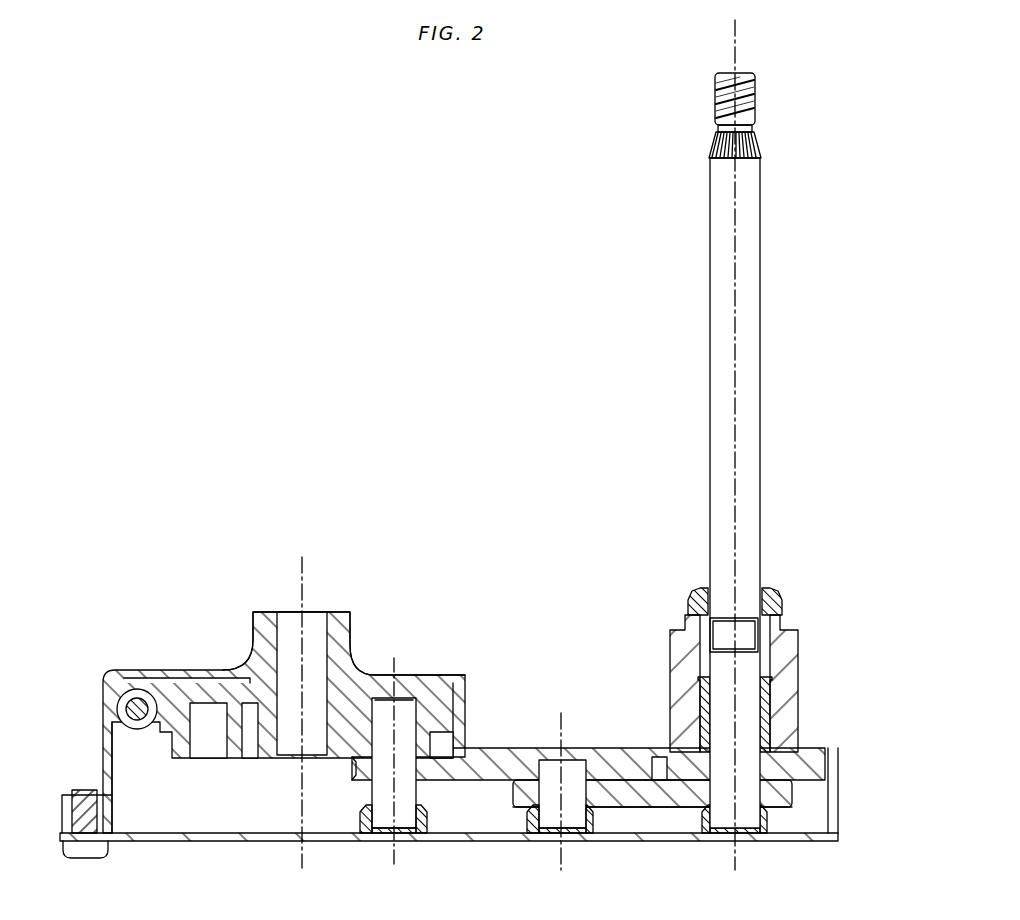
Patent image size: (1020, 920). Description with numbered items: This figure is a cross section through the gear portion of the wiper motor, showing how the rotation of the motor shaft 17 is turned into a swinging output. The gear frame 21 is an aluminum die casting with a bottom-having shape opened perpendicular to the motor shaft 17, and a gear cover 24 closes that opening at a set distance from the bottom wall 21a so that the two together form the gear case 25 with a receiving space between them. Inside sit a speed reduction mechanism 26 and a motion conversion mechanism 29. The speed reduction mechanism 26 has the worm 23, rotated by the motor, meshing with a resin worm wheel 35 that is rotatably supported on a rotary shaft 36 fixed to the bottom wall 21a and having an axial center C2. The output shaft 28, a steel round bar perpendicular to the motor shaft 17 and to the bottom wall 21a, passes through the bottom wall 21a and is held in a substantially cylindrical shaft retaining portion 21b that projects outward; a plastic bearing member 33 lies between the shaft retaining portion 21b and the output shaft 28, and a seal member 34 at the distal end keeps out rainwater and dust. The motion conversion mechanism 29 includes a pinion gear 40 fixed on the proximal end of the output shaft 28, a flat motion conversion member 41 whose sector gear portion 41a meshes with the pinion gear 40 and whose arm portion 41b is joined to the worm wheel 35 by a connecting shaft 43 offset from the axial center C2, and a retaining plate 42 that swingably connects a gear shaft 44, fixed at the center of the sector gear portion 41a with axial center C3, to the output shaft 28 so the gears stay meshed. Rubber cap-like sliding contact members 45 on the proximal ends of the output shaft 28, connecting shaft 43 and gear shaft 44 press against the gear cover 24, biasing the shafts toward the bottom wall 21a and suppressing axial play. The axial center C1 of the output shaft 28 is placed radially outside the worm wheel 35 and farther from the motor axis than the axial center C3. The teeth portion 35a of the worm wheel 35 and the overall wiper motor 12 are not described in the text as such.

The steering apparatus 12 is at (557, 482).
The motor shaft 17 is at (131, 692).
The gear frame 21 is at (459, 664).
The bottom wall 21a is at (196, 676).
The shaft retaining portion 21b is at (779, 665).
The worm 23 is at (148, 695).
The gear cover 24 is at (492, 832).
The gear case 25 is at (512, 578).
The speed reduction mechanism 26 is at (160, 748).
The output shaft 28 is at (745, 424).
The motion conversion mechanism 29 is at (632, 822).
The bearing member 33 is at (768, 718).
The seal member 34 is at (783, 604).
The worm wheel 35 is at (398, 728).
The pin upper end 35a is at (408, 702).
The rotary shaft 36 is at (317, 633).
The pinion gear 40 is at (806, 780).
The motion conversion member 41 is at (576, 781).
The sector gear portion 41a is at (634, 768).
The arm portion 41b is at (350, 778).
The retaining plate 42 is at (672, 802).
The connecting shaft 43 is at (403, 814).
The gear shaft 44 is at (572, 805).
The sliding contact member 45 is at (380, 836).
The axial center of the output shaft C1 is at (736, 266).
The axial center of the worm wheel C2 is at (300, 558).
The axial center of the gear shaft C3 is at (561, 724).